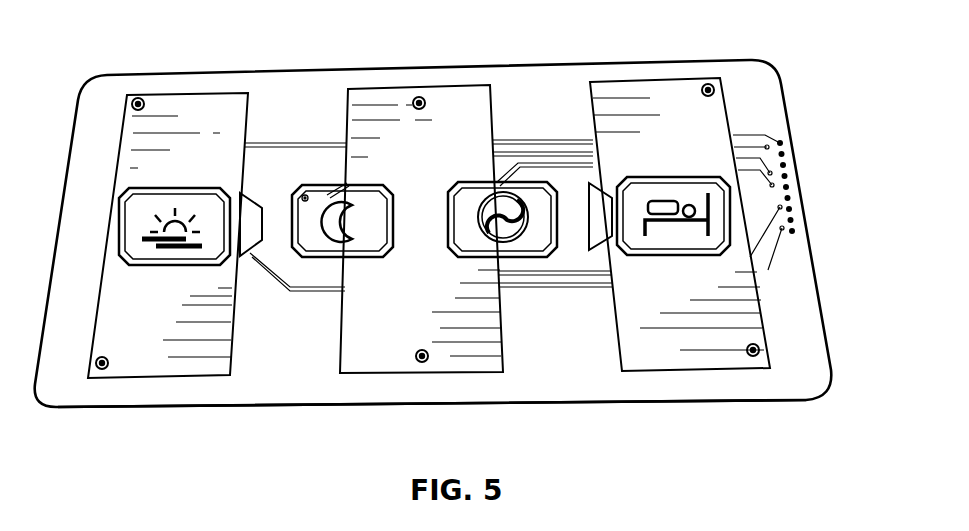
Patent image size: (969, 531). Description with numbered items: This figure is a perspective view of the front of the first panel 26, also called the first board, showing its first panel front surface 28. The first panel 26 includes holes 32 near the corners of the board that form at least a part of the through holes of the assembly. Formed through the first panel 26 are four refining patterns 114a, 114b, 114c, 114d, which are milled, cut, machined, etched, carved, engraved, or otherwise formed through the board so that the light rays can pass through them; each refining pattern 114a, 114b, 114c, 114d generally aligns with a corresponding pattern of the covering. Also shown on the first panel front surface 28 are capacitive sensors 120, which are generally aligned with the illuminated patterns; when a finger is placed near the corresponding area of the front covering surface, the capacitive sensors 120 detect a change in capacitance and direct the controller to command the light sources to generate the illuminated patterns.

The first panel 26 is at (106, 93).
The first panel front surface 28 is at (117, 396).
The holes 32 is at (142, 99).
The capacitive sensors 120 is at (208, 110).
The refining pattern 114a is at (686, 242).
The refining pattern 114b is at (520, 242).
The refining pattern 114c is at (348, 250).
The refining pattern 114d is at (175, 248).